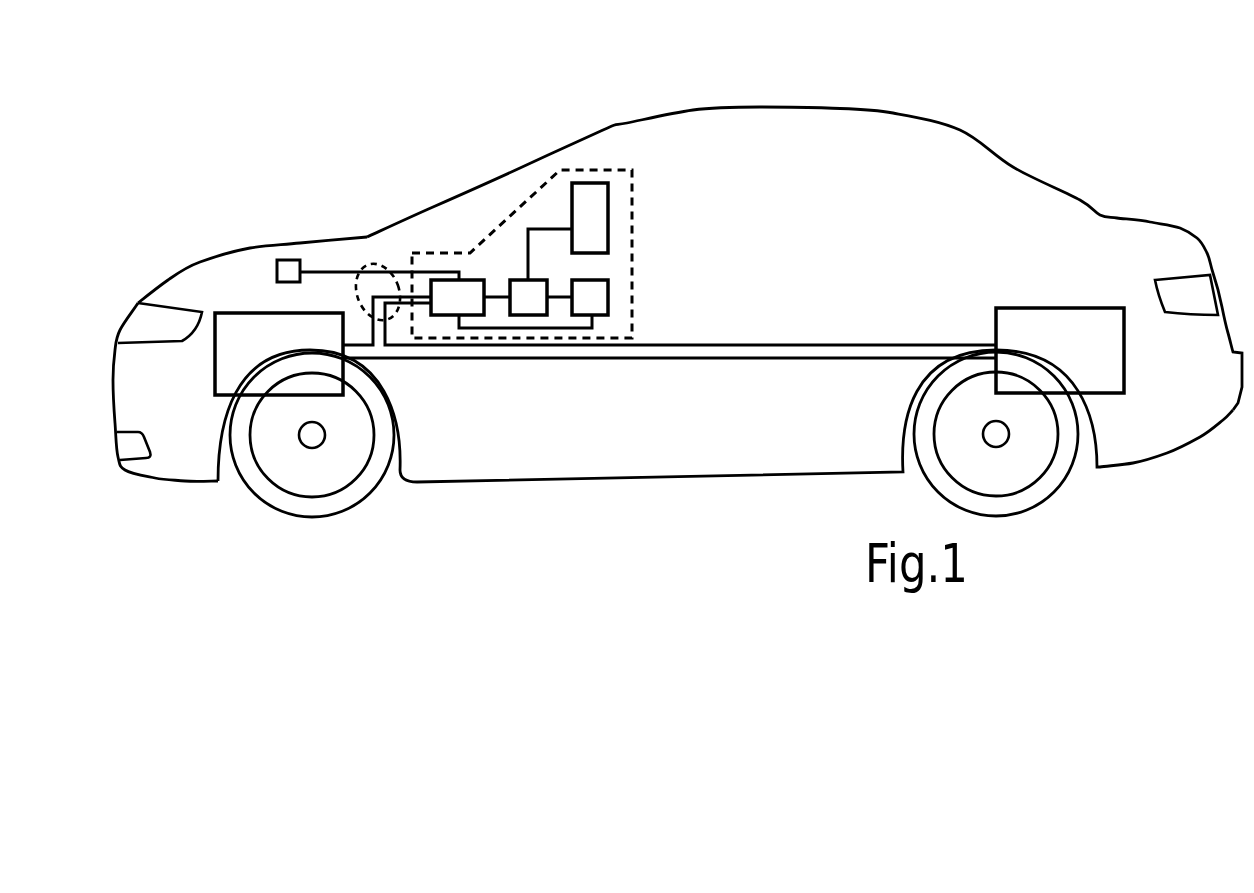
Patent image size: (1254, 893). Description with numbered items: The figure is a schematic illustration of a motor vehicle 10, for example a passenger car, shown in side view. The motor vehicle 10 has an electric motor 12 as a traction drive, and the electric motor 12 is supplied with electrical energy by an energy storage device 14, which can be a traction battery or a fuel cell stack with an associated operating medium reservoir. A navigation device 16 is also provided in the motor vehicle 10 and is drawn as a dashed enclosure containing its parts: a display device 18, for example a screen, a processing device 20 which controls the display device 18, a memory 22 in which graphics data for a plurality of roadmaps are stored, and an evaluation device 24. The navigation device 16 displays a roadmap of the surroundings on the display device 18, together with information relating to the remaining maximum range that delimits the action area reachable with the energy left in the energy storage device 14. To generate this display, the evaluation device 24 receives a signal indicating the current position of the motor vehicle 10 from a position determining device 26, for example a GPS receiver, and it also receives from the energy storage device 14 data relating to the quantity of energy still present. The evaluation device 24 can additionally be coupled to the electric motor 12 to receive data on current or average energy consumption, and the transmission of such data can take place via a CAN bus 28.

The motor vehicle 10 is at (810, 107).
The electric motor 12 is at (215, 357).
The energy storage device 14 is at (1057, 308).
The navigation device 16 is at (632, 237).
The display device 18 is at (608, 203).
The processing device 20 is at (516, 280).
The memory 22 is at (608, 296).
The evaluation device 24 is at (467, 280).
The position determining device 26 is at (290, 260).
The CAN bus 28 is at (373, 262).